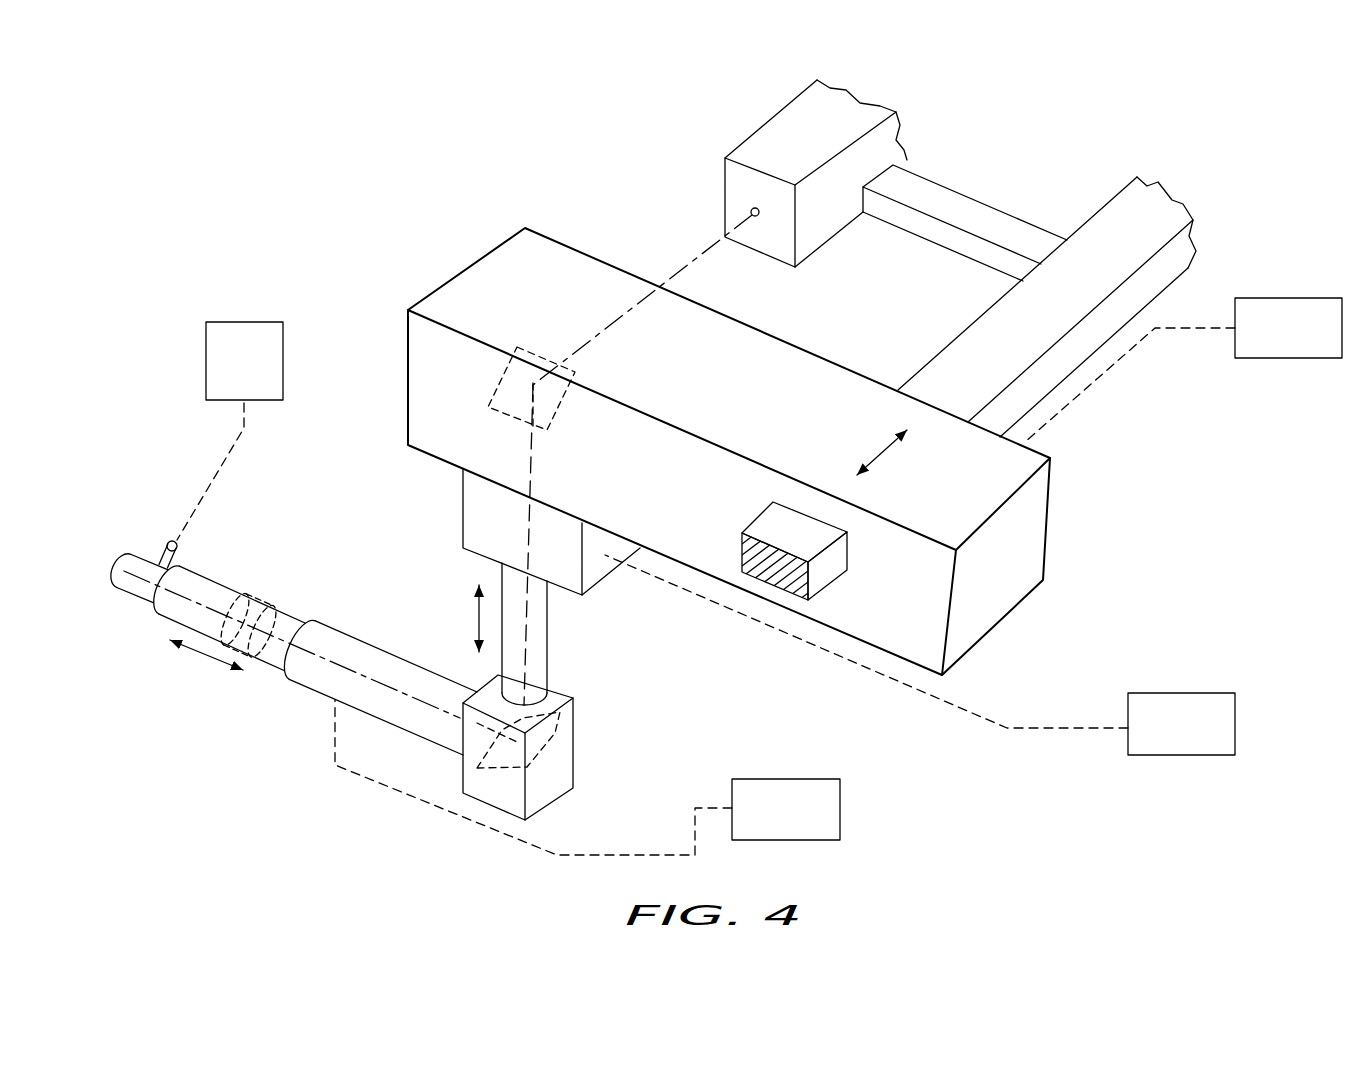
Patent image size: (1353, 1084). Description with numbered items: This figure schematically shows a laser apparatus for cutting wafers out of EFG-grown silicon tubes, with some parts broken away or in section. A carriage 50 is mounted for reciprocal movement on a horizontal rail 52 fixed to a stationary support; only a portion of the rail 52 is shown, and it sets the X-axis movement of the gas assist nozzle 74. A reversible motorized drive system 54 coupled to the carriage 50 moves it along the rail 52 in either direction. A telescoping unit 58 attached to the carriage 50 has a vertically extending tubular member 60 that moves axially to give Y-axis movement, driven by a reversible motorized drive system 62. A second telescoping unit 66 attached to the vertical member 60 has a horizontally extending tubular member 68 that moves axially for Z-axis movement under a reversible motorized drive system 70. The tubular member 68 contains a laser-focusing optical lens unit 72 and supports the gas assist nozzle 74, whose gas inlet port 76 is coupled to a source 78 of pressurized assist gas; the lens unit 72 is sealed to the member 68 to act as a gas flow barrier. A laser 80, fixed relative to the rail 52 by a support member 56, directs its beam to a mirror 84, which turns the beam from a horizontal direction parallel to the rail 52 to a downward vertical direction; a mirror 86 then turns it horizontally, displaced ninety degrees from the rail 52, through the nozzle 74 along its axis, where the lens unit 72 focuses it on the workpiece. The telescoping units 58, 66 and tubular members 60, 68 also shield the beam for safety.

The carriage 50 is at (1054, 496).
The horizontal rail 52 is at (1150, 213).
The reversible motorized drive system 54 is at (1268, 297).
The support member 56 is at (955, 203).
The telescoping unit 58 is at (463, 505).
The vertically-extending tubular member 60 is at (548, 628).
The reversible motorized drive system 62 is at (1178, 676).
The second telescoping unit 66 is at (573, 716).
The horizontally extending tubular member 68 is at (298, 615).
The reversible motorized drive system 70 is at (772, 779).
The laser-focusing optical lens unit 72 is at (287, 600).
The gas assist nozzle 74 is at (142, 600).
The gas inlet port 76 is at (162, 550).
The source of pressurized assist gas 78 is at (283, 362).
The laser 80 is at (842, 205).
The mirror 84 is at (500, 377).
The mirror 86 is at (573, 747).